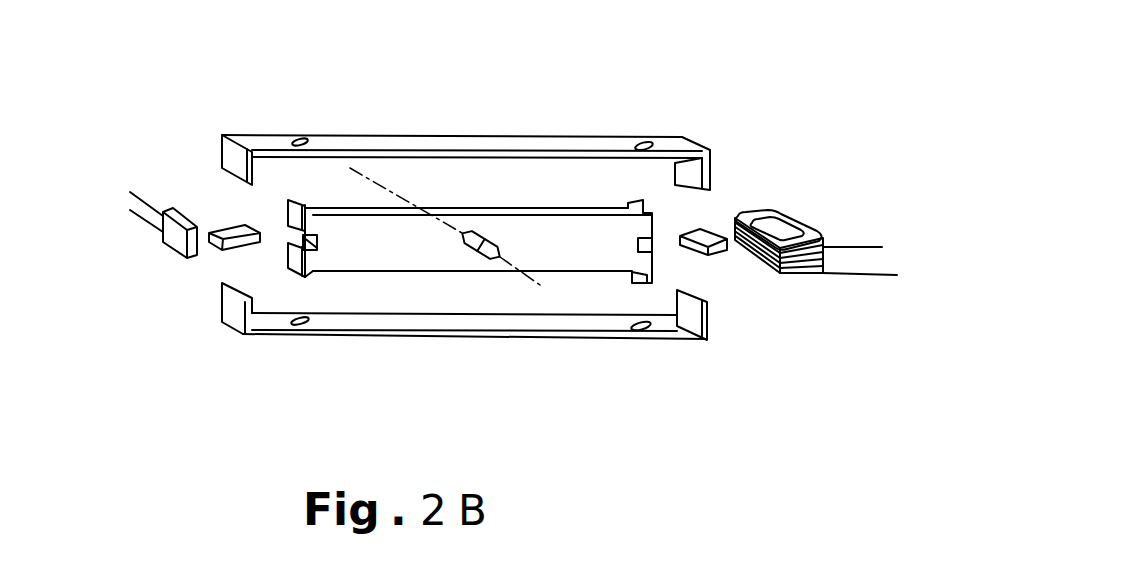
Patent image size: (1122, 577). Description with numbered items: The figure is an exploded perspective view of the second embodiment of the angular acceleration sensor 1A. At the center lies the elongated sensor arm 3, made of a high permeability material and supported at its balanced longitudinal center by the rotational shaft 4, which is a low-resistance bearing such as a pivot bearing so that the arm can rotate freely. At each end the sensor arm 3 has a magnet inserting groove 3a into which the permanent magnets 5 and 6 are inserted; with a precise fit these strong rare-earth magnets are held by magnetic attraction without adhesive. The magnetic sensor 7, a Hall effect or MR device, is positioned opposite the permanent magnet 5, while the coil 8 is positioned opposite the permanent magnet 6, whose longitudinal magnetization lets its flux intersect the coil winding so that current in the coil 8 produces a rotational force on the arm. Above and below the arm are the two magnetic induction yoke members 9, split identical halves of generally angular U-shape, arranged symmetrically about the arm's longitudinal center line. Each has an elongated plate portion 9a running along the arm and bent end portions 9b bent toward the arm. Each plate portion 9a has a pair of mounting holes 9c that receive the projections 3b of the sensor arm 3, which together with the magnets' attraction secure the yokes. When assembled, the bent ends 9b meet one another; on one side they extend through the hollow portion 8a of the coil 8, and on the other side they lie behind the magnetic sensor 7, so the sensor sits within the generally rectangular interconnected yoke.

The angular acceleration sensor 1A is at (747, 80).
The sensor arm 3 is at (507, 285).
The magnet inserting groove 3a is at (647, 243).
The projection 3b is at (298, 200).
The rotational shaft 4 is at (499, 251).
The permanent magnet 5 is at (228, 214).
The permanent magnet 6 is at (712, 232).
The magnetic sensor 7 is at (175, 247).
The coil 8 is at (816, 199).
The hollow portion 8a is at (778, 230).
The magnetic induction yoke member 9 is at (504, 254).
The elongated plate portion 9a is at (489, 135).
The bent end portion 9b is at (231, 158).
The mounting hole 9c is at (305, 141).